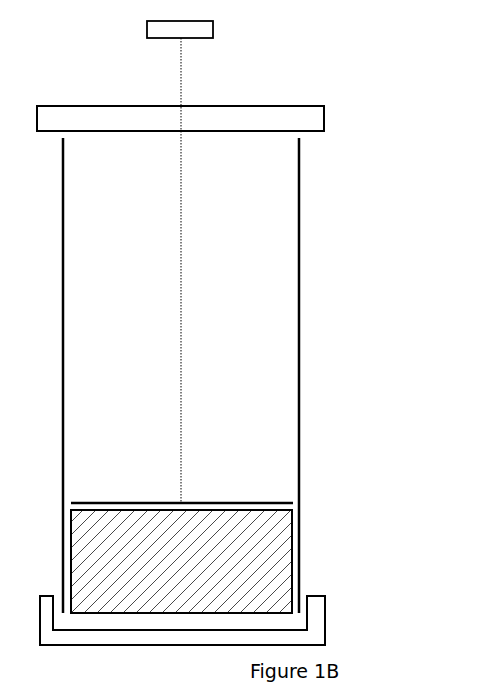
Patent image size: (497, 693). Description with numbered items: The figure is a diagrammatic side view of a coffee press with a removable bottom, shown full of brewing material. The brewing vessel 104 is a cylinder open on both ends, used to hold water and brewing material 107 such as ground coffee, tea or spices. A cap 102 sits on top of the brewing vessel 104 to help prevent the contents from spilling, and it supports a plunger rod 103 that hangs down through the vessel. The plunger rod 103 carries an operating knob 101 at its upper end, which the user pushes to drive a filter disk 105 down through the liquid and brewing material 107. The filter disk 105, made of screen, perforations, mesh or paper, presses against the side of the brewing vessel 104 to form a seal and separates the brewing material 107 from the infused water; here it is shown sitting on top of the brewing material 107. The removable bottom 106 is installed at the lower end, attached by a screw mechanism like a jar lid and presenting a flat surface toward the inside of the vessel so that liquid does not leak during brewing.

The operating knob 101 is at (221, 29).
The cap 102 is at (256, 105).
The plunger rod 103 is at (184, 298).
The brewing vessel 104 is at (303, 392).
The filter disk 105 is at (238, 498).
The removable bottom 106 is at (326, 621).
The brewing material 107 is at (223, 559).